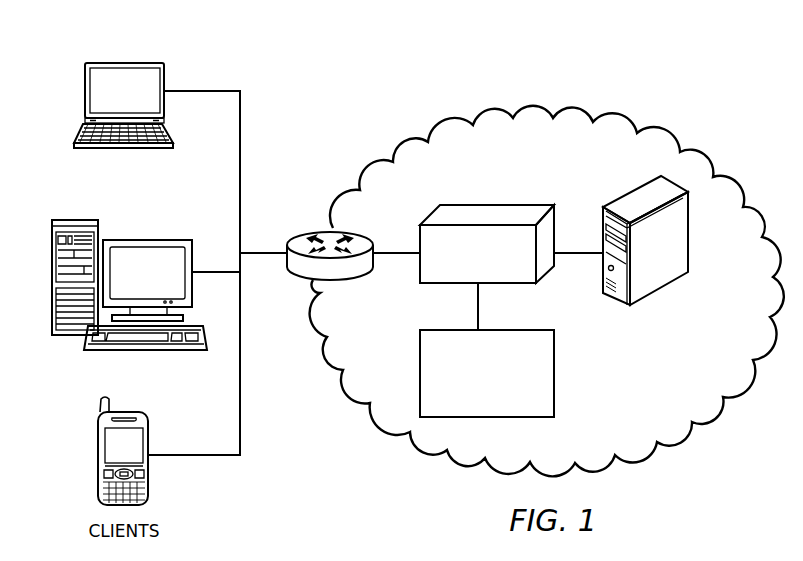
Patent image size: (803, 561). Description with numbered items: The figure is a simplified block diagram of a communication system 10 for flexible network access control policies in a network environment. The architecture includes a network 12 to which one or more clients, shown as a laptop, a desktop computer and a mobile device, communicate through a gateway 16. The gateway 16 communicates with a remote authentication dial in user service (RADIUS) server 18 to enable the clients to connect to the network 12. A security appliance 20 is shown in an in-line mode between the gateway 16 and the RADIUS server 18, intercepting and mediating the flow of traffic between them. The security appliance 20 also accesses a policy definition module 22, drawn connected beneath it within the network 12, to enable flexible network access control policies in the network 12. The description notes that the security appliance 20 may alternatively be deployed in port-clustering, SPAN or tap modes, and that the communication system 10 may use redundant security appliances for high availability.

The communication system 10 is at (550, 61).
The network 12 is at (671, 128).
The gateway 16 is at (318, 233).
The RADIUS server 18 is at (690, 240).
The security appliance 20 is at (500, 213).
The policy definition module 22 is at (554, 383).